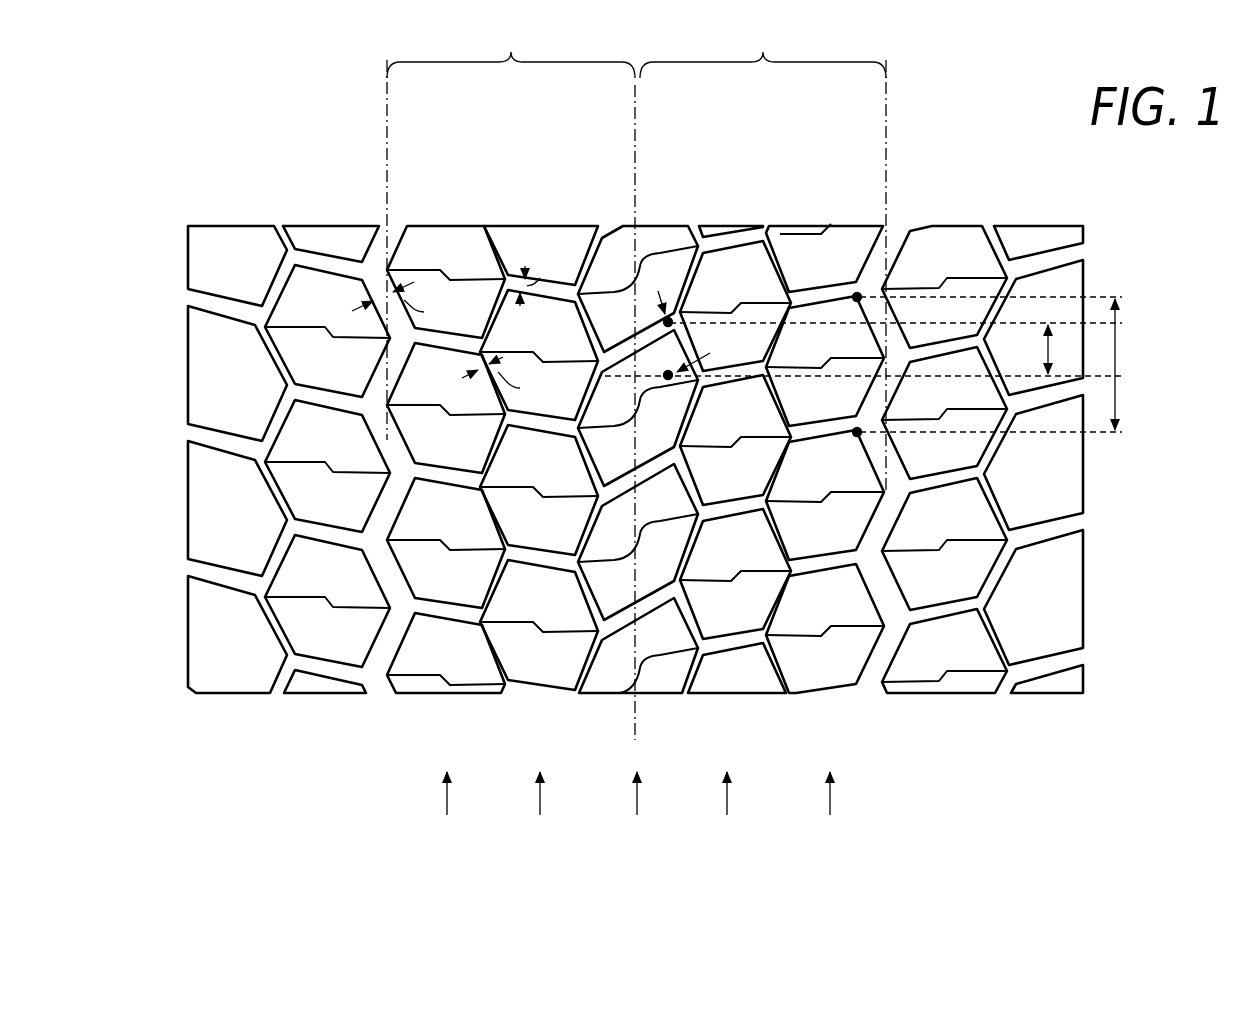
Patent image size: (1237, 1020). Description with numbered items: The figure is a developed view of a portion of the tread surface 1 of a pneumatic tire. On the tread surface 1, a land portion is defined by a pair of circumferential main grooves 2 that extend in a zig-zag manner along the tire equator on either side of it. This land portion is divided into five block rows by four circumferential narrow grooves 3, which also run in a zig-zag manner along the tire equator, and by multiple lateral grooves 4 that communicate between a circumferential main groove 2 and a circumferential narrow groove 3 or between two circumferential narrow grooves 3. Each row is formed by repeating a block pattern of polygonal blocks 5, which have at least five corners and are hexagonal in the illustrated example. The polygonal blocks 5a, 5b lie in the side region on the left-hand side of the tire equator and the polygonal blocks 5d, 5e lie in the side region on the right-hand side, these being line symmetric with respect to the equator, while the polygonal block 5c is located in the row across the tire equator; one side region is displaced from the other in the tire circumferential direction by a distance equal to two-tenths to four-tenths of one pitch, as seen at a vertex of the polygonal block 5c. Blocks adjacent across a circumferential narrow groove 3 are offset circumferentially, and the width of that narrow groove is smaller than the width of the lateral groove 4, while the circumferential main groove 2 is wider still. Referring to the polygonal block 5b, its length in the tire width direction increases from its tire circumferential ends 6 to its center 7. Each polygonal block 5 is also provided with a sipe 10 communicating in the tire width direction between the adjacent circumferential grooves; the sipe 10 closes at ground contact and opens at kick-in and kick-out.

The tread surface 1 is at (984, 184).
The circumferential main groove 2 is at (396, 224).
The circumferential narrow groove 3 is at (479, 224).
The lateral groove 4 is at (447, 347).
The polygonal block 5 is at (448, 583).
The polygonal block 5a is at (463, 527).
The polygonal block 5b is at (555, 475).
The polygonal block 5c is at (678, 512).
The polygonal block 5d is at (751, 420).
The polygonal block 5e is at (843, 540).
The tire circumferential end 6 is at (497, 421).
The center 7 is at (480, 482).
The sipe 10 is at (783, 497).